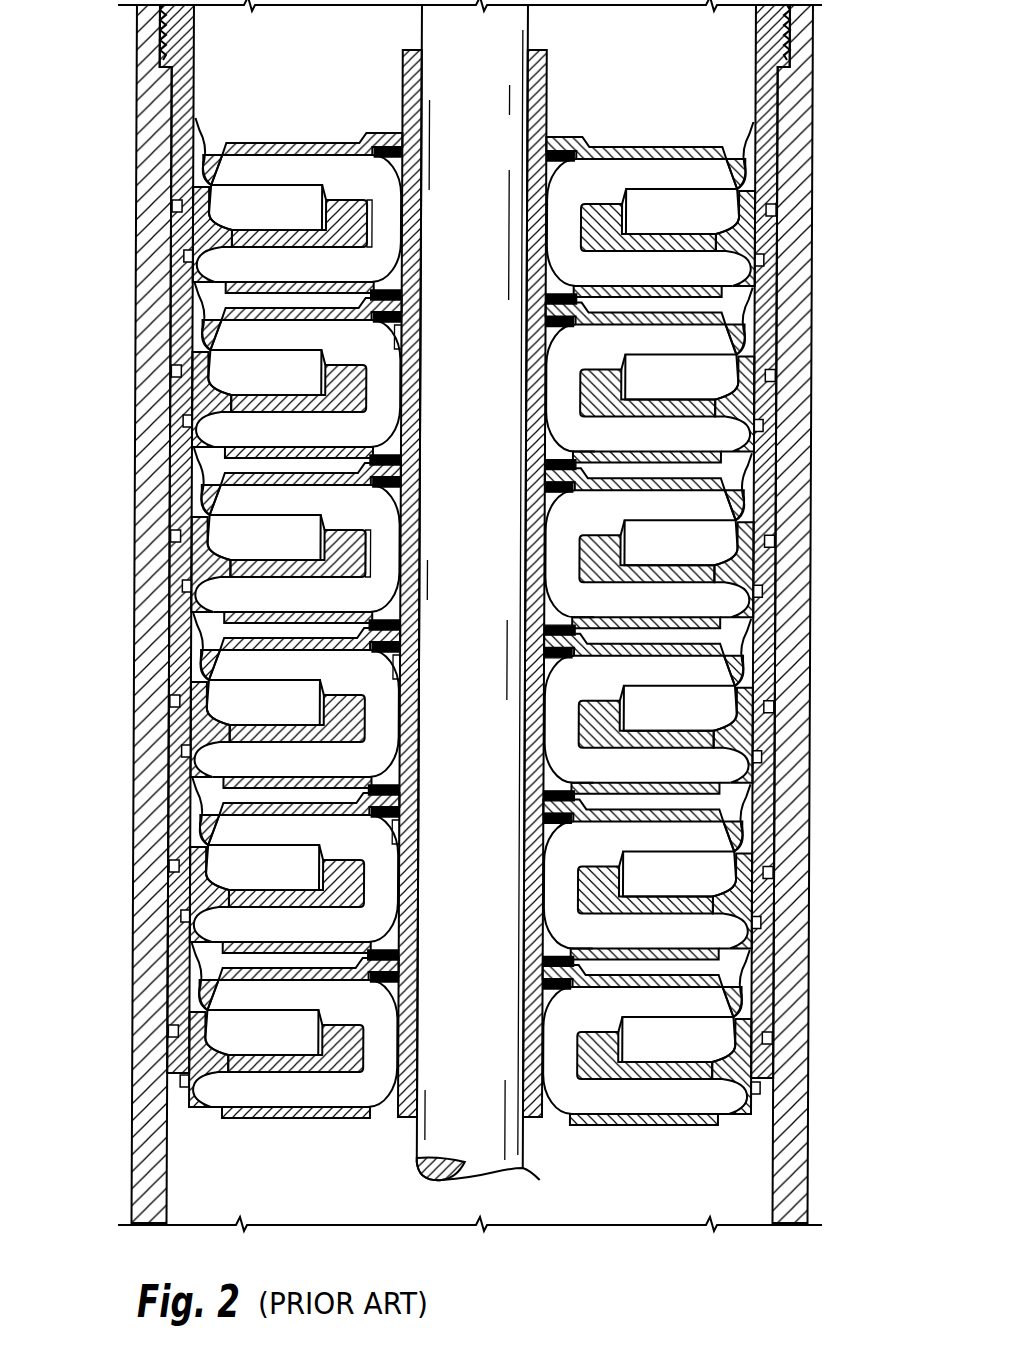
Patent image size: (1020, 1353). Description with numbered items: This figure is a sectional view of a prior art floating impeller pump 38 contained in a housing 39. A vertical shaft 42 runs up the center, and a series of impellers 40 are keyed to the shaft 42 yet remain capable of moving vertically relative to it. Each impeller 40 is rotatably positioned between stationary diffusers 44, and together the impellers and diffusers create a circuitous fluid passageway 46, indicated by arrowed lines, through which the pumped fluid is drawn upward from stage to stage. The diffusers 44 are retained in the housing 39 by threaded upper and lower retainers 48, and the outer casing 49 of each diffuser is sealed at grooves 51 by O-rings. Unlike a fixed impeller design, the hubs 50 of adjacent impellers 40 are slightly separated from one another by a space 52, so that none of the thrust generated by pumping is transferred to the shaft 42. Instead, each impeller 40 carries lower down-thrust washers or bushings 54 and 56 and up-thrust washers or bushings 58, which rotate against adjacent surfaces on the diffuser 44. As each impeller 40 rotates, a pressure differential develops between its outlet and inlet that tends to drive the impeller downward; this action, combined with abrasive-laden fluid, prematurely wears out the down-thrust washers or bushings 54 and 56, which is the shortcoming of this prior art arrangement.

The floating impeller pump 38 is at (828, 219).
The housing 39 is at (800, 272).
The impeller 40 is at (168, 297).
The shaft 42 is at (505, 32).
The diffuser 44 is at (185, 190).
The circuitous fluid passageway 46 is at (245, 768).
The threaded upper retainer 48 is at (790, 56).
The outer casing 49 is at (195, 130).
The hub 50 is at (405, 72).
The groove 51 is at (172, 370).
The space 52 is at (405, 348).
The lower down-thrust washer or bushing 54 is at (403, 198).
The lower down-thrust washer or bushing 56 is at (548, 152).
The up-thrust washer or bushing 58 is at (402, 283).